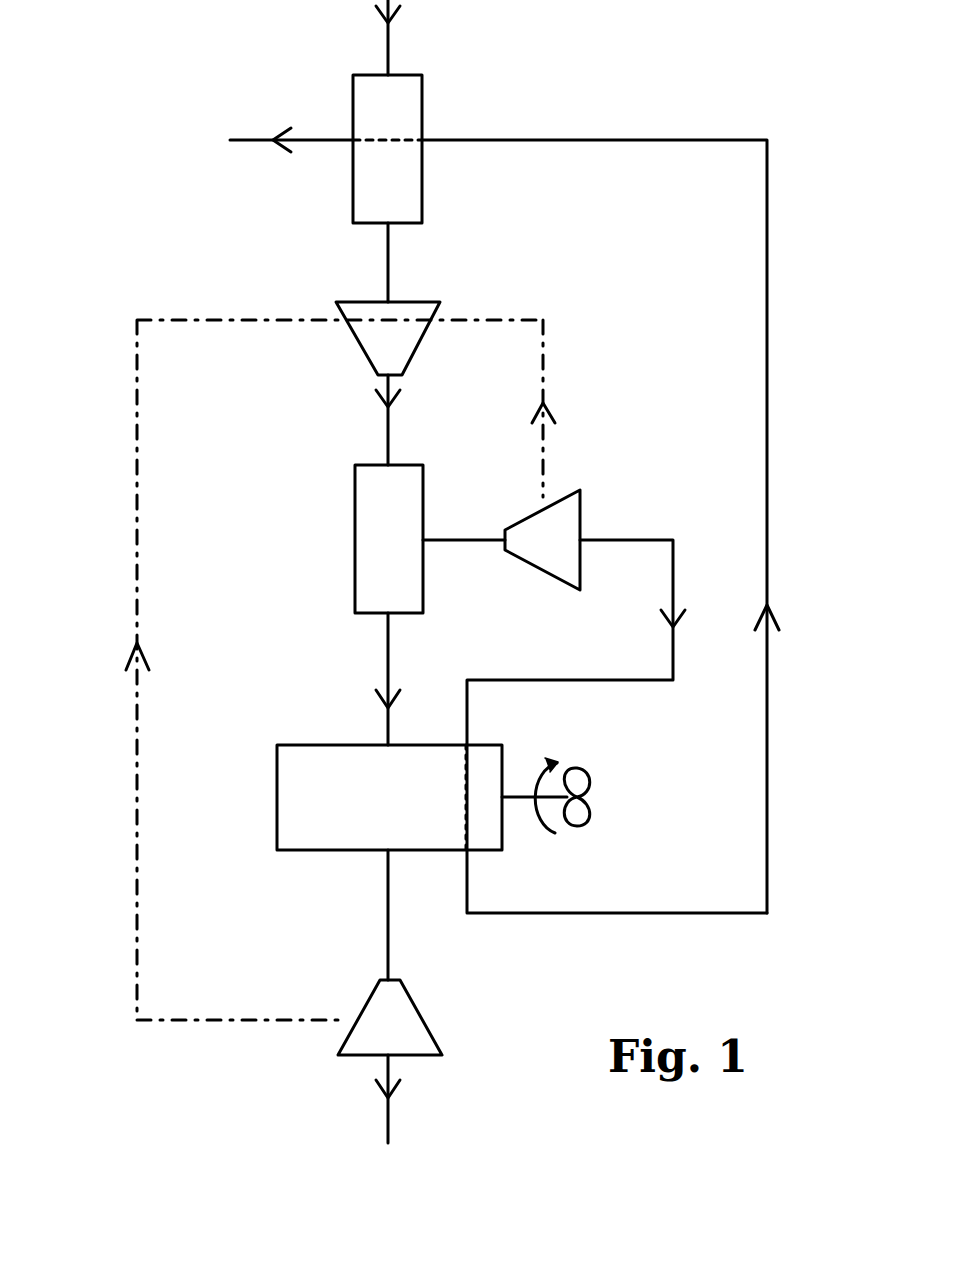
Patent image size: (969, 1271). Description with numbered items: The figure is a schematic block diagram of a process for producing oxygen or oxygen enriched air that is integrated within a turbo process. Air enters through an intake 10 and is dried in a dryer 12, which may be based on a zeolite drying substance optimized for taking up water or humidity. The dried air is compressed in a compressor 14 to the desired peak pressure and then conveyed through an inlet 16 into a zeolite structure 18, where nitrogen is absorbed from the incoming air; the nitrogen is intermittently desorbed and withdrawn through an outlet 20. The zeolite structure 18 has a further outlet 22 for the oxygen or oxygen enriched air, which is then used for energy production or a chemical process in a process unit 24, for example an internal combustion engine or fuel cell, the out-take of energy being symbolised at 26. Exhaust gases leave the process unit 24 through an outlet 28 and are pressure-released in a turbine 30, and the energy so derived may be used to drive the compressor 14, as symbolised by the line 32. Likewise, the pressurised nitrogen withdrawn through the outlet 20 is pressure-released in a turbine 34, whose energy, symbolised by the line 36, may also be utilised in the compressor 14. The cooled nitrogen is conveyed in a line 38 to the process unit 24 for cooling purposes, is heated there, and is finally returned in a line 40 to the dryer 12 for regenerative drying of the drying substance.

The intake 10 is at (388, 45).
The dryer 12 is at (422, 100).
The compressor 14 is at (413, 300).
The inlet 16 is at (386, 430).
The zeolite structure 18 is at (354, 545).
The outlet 20 is at (470, 540).
The outlet 22 is at (386, 670).
The process unit 24 is at (276, 808).
The out-take of energy 26 is at (600, 797).
The outlet 28 is at (386, 940).
The turbine 30 is at (425, 1020).
The line 32 is at (136, 540).
The turbine 34 is at (585, 497).
The line 36 is at (548, 335).
The line 38 is at (633, 680).
The line 40 is at (768, 505).